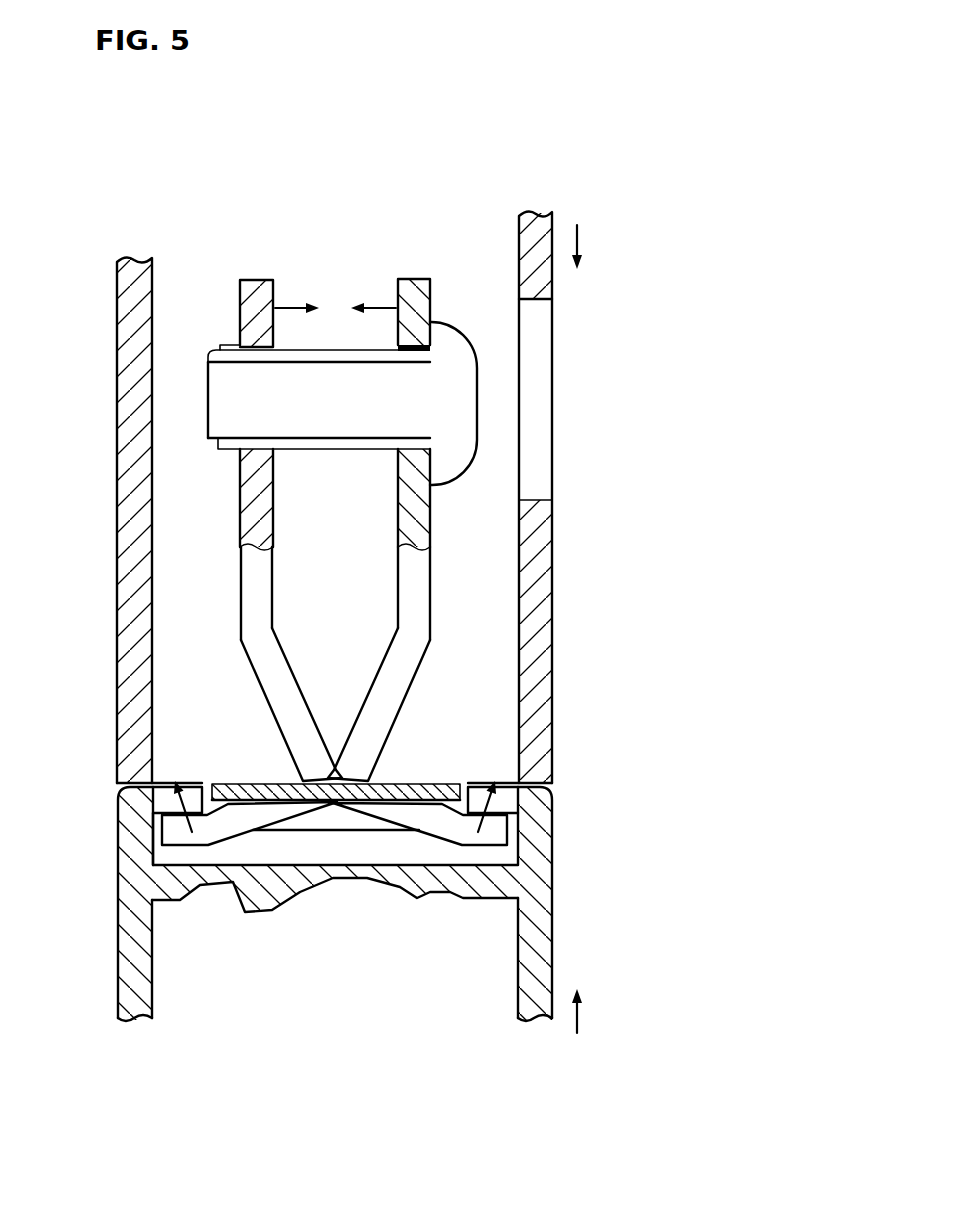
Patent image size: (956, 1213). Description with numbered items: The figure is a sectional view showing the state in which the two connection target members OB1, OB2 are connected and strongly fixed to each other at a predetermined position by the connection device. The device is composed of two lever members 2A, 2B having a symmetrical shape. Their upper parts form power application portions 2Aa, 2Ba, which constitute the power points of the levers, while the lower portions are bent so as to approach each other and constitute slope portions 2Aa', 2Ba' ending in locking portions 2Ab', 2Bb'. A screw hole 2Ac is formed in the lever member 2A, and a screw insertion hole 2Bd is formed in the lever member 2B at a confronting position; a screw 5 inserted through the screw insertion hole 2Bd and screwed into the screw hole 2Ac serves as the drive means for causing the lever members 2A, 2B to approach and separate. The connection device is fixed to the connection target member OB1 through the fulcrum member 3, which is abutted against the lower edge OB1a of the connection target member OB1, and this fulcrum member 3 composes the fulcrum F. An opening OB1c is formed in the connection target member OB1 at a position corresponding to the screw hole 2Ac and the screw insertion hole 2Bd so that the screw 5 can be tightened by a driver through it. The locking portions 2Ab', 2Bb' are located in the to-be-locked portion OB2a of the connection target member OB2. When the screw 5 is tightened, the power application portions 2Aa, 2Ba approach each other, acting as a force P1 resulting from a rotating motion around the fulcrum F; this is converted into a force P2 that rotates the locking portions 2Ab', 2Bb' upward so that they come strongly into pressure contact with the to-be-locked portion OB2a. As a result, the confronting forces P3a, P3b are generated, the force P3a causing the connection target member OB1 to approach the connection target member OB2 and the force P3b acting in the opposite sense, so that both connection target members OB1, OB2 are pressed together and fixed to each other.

The lever member 2A is at (258, 279).
The lever member 2B is at (416, 279).
The screw hole 2Ac is at (208, 370).
The screw insertion hole 2Bd is at (428, 372).
The power application portion 2Aa is at (214, 544).
The power application portion 2Ba is at (456, 544).
The slope portion 2Aa' is at (258, 704).
The slope portion 2Ba' is at (415, 704).
The locking portion 2Ab' is at (249, 880).
The locking portion 2Bb' is at (380, 880).
The fulcrum member 3 is at (418, 784).
The screw 5 is at (462, 412).
The fulcrum portion F is at (340, 802).
The connection target member OB1 is at (117, 305).
The lower edge OB1a is at (124, 787).
The opening OB1c is at (542, 466).
The connection target member OB2 is at (553, 950).
The to-be-locked portion OB2a is at (152, 835).
The force P1 is at (335, 310).
The force P2 is at (335, 786).
The force P3a is at (581, 232).
The force P3b is at (581, 1031).